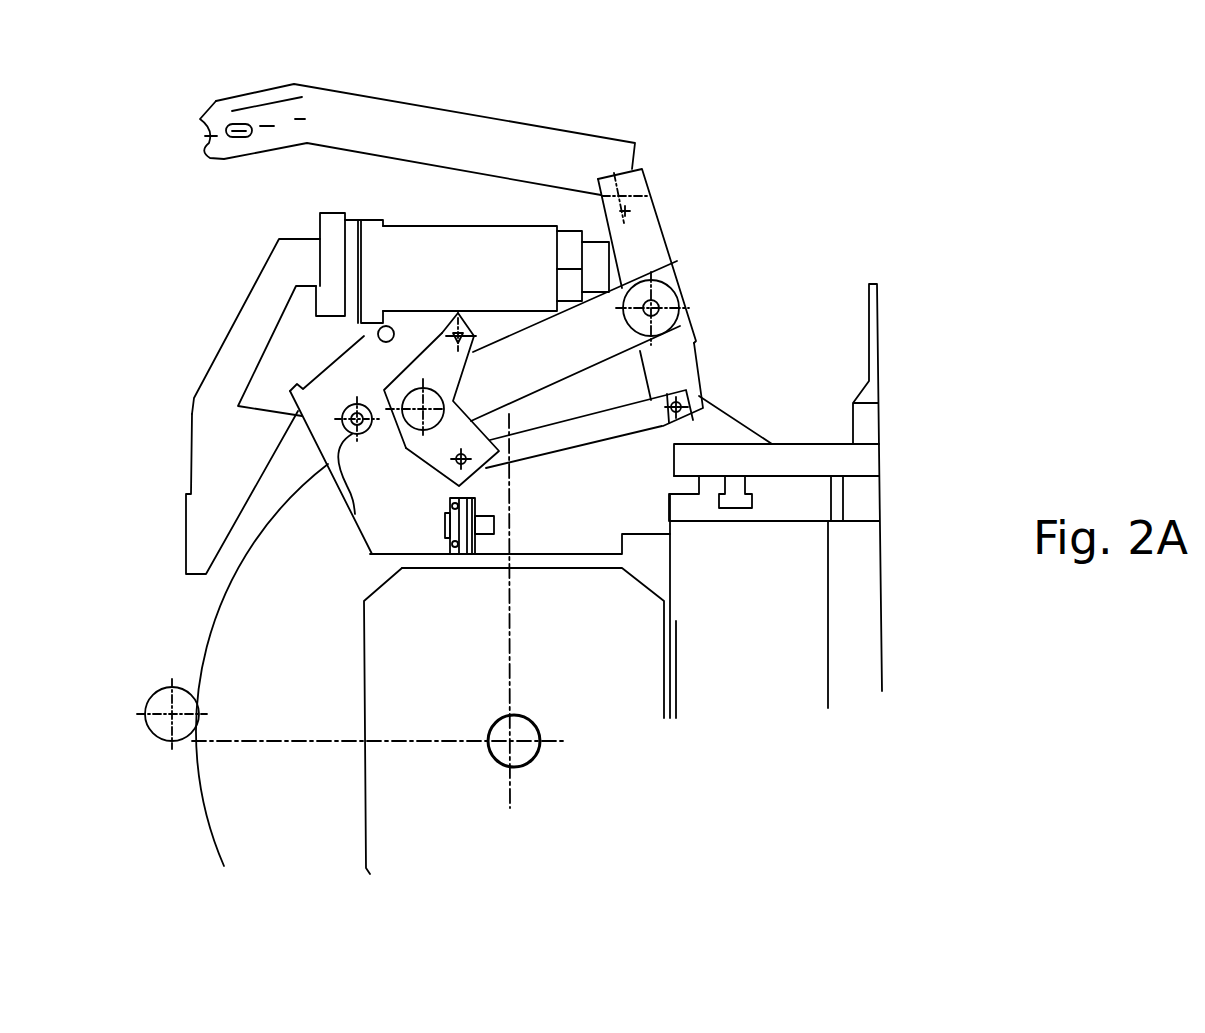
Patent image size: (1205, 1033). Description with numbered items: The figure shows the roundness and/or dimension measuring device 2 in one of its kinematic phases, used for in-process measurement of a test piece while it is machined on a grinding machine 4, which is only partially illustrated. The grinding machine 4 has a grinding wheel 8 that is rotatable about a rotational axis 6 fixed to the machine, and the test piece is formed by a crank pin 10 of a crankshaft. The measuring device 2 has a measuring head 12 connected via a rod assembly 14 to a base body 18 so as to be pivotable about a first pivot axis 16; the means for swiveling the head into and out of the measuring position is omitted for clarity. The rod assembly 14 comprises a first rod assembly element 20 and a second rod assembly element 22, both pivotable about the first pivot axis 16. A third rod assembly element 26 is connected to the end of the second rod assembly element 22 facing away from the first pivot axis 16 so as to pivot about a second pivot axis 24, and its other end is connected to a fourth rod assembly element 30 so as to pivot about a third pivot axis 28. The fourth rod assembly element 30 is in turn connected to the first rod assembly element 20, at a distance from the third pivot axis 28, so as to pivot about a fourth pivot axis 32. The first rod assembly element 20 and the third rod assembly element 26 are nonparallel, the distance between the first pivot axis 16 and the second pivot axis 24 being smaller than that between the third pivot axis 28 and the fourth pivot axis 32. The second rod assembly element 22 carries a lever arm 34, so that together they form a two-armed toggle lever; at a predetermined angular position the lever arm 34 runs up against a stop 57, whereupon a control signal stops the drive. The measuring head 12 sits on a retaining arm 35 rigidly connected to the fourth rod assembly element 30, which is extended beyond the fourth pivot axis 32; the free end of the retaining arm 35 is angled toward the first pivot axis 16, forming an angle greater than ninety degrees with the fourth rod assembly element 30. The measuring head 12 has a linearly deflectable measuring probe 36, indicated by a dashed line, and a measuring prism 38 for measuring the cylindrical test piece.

The measuring device 2 is at (684, 145).
The grinding machine 4 is at (187, 811).
The rotational axis 6 is at (514, 738).
The grinding wheel 8 is at (218, 624).
The crank pin 10 is at (150, 696).
The measuring head 12 is at (247, 60).
The rod assembly 14 is at (692, 213).
The first pivot axis 16 is at (419, 407).
The base body 18 is at (332, 386).
The first rod assembly element 20 is at (610, 298).
The second rod assembly element 22 is at (432, 447).
The second pivot axis 24 is at (466, 461).
The third rod assembly element 26 is at (588, 430).
The third pivot axis 28 is at (694, 393).
The fourth rod assembly element 30 is at (686, 352).
The fourth pivot axis 32 is at (657, 305).
The lever arm 34 is at (437, 362).
The retaining arm 35 is at (425, 110).
The measuring probe 36 is at (263, 120).
The measuring prism 38 is at (203, 126).
The stop 57 is at (352, 514).